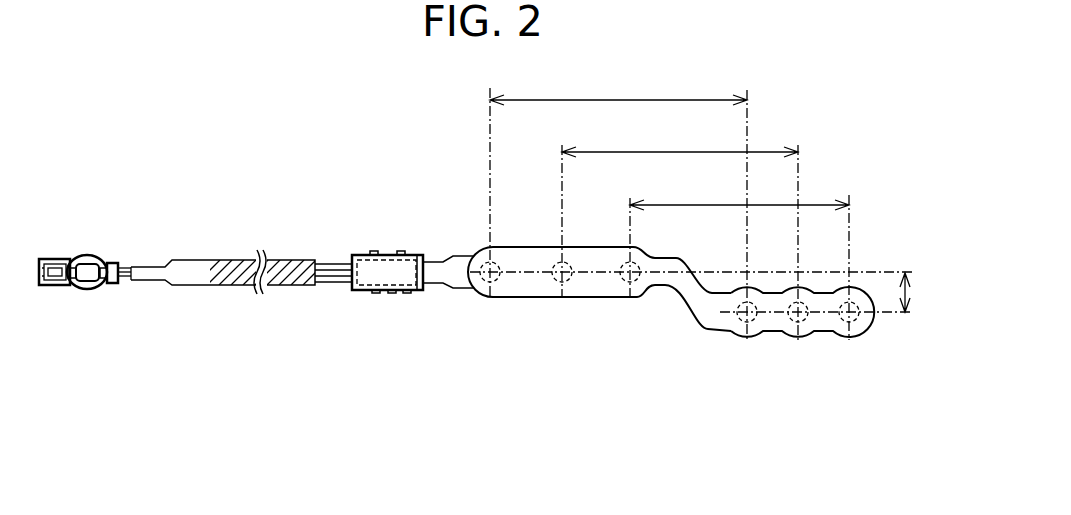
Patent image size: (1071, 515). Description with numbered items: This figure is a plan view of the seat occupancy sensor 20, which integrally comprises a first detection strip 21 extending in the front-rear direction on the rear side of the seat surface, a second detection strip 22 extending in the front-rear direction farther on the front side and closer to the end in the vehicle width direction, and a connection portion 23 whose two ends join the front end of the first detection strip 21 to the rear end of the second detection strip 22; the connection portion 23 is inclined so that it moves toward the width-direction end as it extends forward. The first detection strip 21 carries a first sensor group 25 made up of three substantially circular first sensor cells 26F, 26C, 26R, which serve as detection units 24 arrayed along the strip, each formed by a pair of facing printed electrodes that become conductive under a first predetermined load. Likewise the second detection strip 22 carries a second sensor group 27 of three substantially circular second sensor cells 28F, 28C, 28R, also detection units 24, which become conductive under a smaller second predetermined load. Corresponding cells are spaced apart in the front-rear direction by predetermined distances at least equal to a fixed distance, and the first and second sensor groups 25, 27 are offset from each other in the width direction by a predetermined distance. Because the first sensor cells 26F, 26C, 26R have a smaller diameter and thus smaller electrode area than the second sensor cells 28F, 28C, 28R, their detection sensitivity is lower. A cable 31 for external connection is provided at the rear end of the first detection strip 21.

The seat occupancy sensor 20 is at (690, 277).
The first detection strip 21 is at (522, 247).
The second detection strip 22 is at (780, 288).
The connection portion 23 is at (677, 310).
The detection units 24 is at (679, 372).
The first sensor group 25 is at (559, 350).
The first sensor cell 26R is at (497, 281).
The first sensor cell 26C is at (550, 281).
The first sensor cell 26F is at (616, 316).
The second sensor group 27 is at (798, 392).
The second sensor cell 28R is at (734, 337).
The second sensor cell 28C is at (786, 337).
The second sensor cell 28F is at (862, 337).
The cable 31 is at (301, 258).